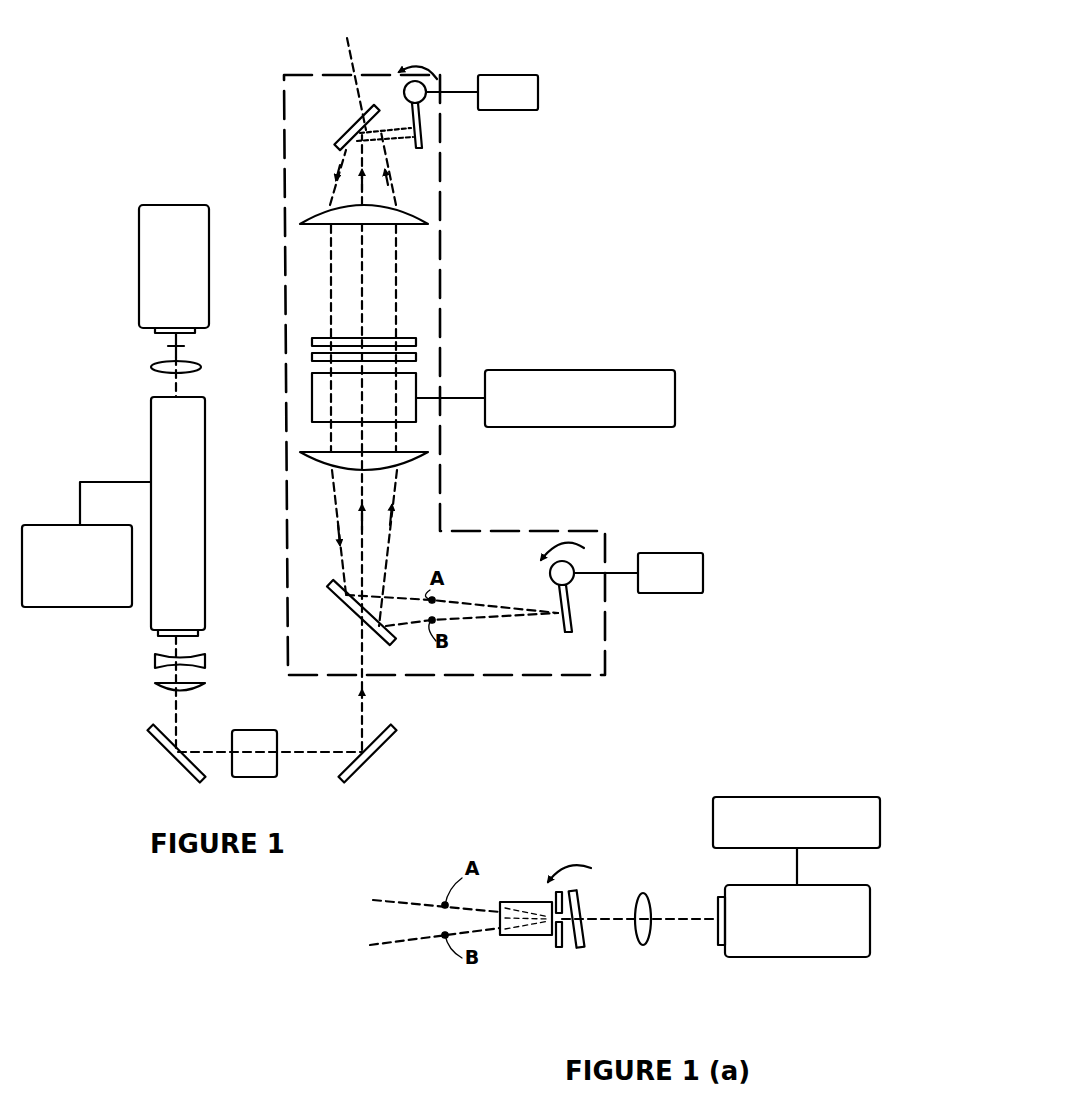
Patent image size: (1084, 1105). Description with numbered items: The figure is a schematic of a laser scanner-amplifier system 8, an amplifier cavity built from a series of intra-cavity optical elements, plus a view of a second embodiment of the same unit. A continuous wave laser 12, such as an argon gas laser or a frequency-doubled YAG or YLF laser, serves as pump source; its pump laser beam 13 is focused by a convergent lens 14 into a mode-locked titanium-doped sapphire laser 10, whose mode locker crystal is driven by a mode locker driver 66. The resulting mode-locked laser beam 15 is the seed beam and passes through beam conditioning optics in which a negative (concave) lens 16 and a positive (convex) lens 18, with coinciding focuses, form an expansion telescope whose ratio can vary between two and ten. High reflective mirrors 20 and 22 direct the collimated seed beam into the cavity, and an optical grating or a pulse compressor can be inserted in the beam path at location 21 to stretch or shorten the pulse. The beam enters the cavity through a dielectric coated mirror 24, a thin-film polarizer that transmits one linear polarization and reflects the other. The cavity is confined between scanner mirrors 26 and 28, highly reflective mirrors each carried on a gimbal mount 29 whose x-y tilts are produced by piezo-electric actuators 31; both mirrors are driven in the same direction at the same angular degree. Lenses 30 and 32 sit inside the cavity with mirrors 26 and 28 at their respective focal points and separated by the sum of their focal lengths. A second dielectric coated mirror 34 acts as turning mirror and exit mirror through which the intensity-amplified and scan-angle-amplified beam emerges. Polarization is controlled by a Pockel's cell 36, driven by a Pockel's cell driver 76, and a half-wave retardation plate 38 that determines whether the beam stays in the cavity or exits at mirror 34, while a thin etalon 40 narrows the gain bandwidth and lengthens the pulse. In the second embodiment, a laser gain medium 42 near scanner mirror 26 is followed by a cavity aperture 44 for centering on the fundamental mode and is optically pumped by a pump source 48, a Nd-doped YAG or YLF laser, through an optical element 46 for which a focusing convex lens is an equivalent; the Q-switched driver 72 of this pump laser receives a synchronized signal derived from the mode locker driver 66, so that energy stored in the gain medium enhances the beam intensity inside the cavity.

In FIG. 1, the laser scanner-amplifier system 8 is at (542, 531).
In FIG. 1, the mode-locked laser 10 is at (178, 516).
In FIG. 1, the continuous wave laser 12 is at (174, 269).
In FIG. 1, the pump laser beam 13 is at (168, 346).
In FIG. 1, the convergent lens 14 is at (151, 367).
In FIG. 1, the mode-locked laser beam 15 is at (367, 698).
In FIG. 1, the negative lens 16 is at (155, 664).
In FIG. 1, the positive lens 18 is at (155, 688).
In FIG. 1, the high reflective mirror 20 is at (187, 772).
In FIG. 1, the beam path location 21 is at (258, 730).
In FIG. 1, the high reflective mirror 22 is at (383, 749).
In FIG. 1, the dielectric coated mirror 24 is at (356, 608).
In FIG. 1, the scanner mirror 26 is at (563, 631).
In FIG. 1A, the scanner mirror 26 is at (583, 934).
In FIG. 1, the scanner mirror 28 is at (421, 142).
In FIG. 1, the gimbal mount 29 is at (426, 85).
In FIG. 1, the concave lens 30 is at (414, 462).
In FIG. 1, the piezo-electric actuator 31 is at (482, 92).
In FIG. 1, the concave lens 32 is at (414, 218).
In FIG. 1, the dielectric coated mirror 34 is at (346, 139).
In FIG. 1, the Pockel's cell 36 is at (418, 376).
In FIG. 1, the half-wave retardation plate 38 is at (404, 353).
In FIG. 1, the thin etalon 40 is at (399, 338).
In FIG. 1A, the laser gain medium 42 is at (517, 936).
In FIG. 1A, the cavity aperture 44 is at (560, 948).
In FIG. 1A, the optical element 46 is at (643, 893).
In FIG. 1A, the pump source 48 is at (794, 921).
In FIG. 1, the mode locker driver 66 is at (82, 607).
In FIG. 1A, the Q-switched driver 72 is at (765, 797).
In FIG. 1, the Pockel's cell driver 76 is at (615, 370).